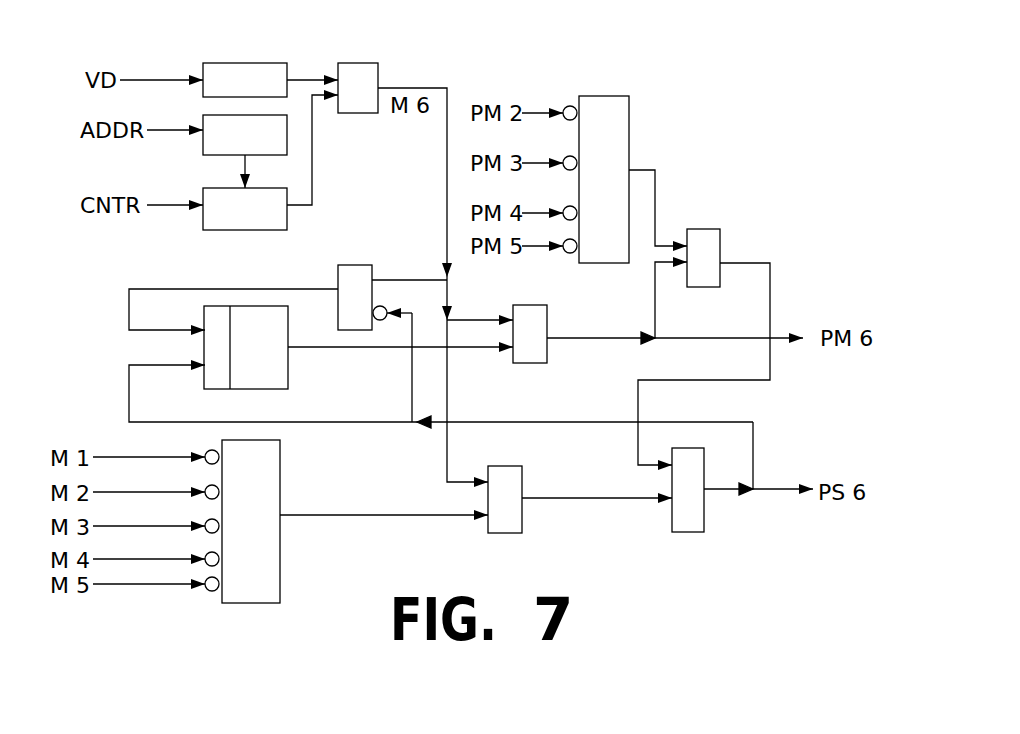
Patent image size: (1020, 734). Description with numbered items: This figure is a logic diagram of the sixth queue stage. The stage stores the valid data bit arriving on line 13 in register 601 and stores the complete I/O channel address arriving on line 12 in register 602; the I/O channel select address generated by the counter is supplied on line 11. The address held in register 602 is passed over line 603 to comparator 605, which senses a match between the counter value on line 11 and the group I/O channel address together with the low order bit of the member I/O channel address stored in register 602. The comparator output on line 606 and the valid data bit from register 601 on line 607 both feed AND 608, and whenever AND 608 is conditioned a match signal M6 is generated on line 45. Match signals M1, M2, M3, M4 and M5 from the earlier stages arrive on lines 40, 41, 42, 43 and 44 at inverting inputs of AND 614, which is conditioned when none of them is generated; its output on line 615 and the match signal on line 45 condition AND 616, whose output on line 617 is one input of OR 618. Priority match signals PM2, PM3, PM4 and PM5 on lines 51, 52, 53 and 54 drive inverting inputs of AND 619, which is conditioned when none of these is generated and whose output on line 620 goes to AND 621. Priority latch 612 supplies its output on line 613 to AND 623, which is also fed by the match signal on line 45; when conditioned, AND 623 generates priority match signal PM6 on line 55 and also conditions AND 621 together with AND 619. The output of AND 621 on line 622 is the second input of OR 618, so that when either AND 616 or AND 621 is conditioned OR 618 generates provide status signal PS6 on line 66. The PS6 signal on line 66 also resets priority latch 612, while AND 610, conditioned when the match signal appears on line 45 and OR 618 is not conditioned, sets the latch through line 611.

The line 11 is at (177, 205).
The line 12 is at (188, 130).
The line 13 is at (185, 80).
The register 601 is at (210, 73).
The register 602 is at (220, 130).
The register output line 603 is at (245, 180).
The comparator 605 is at (250, 222).
The comparator output line 606 is at (313, 172).
The register output line 607 is at (305, 80).
The AND 608 is at (363, 75).
The AND circuit 610 is at (353, 273).
The set line 611 is at (129, 320).
The priority latch 612 is at (263, 372).
The latch output line 613 is at (397, 347).
The AND 614 is at (262, 482).
The AND gate output line 615 is at (403, 515).
The AND 616 is at (515, 515).
The AND gate output line 617 is at (648, 500).
The OR 618 is at (687, 515).
The AND 619 is at (603, 120).
The AND gate output line 620 is at (640, 168).
The AND 621 is at (695, 243).
The AND gate output line 622 is at (737, 260).
The AND 623 is at (528, 347).
The line 45 is at (445, 213).
The line 51 is at (537, 110).
The line 52 is at (537, 160).
The line 53 is at (537, 210).
The line 54 is at (540, 248).
The line 55 is at (780, 333).
The line 66 is at (772, 488).
The line 40 is at (128, 457).
The line 41 is at (160, 492).
The line 42 is at (165, 526).
The line 43 is at (167, 559).
The line 44 is at (165, 583).